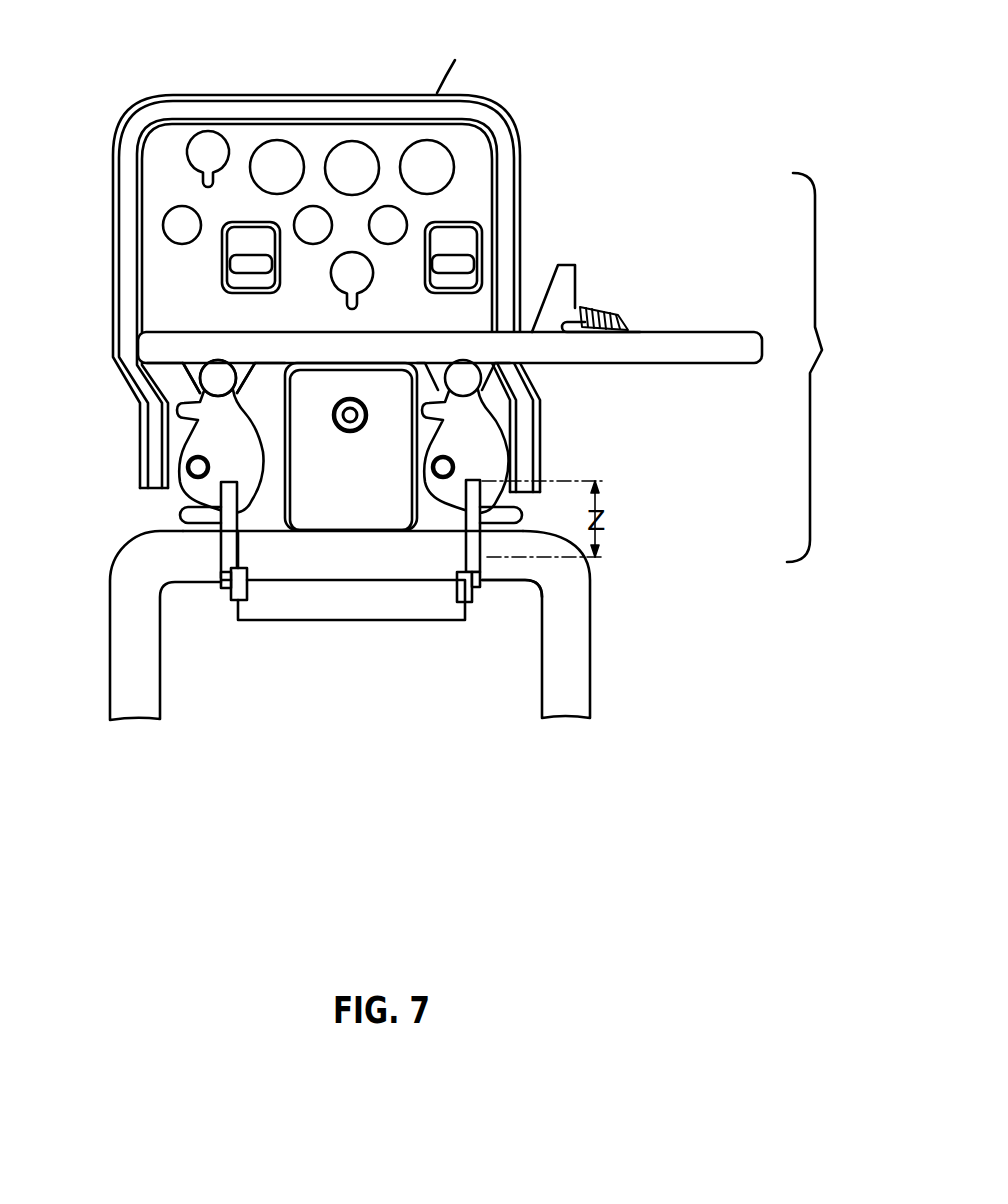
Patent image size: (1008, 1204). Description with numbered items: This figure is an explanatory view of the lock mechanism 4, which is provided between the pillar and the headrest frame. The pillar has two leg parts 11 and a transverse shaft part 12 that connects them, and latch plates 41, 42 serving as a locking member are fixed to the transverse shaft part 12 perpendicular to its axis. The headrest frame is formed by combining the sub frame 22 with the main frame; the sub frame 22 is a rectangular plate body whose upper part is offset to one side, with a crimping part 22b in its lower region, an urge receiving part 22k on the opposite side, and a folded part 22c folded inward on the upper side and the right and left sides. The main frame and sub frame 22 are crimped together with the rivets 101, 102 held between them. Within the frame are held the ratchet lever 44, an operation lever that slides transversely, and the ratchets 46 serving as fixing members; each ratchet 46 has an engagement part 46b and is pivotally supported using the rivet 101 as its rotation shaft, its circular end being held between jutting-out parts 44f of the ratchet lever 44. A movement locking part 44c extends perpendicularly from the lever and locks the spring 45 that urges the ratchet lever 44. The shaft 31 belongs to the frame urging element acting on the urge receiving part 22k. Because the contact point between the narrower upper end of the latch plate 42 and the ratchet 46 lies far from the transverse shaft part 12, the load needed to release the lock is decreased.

The lock mechanism 4 is at (818, 367).
The leg parts 11 is at (580, 660).
The transverse shaft part 12 is at (493, 578).
The sub frame 22 is at (502, 117).
The crimping part 22b is at (325, 612).
The folded part 22c is at (437, 93).
The urge receiving part 22k is at (355, 513).
The shaft 31 is at (182, 512).
The latch plate 41 is at (222, 547).
The latch plate 42 is at (470, 552).
The ratchet lever 44 is at (720, 332).
The movement locking part 44c is at (567, 270).
The jutting-out parts 44f is at (203, 386).
The spring 45 is at (600, 307).
The ratchet 46 is at (202, 435).
The engagement part 46b is at (180, 369).
The rivet 101 is at (197, 466).
The rivet 102 is at (356, 412).